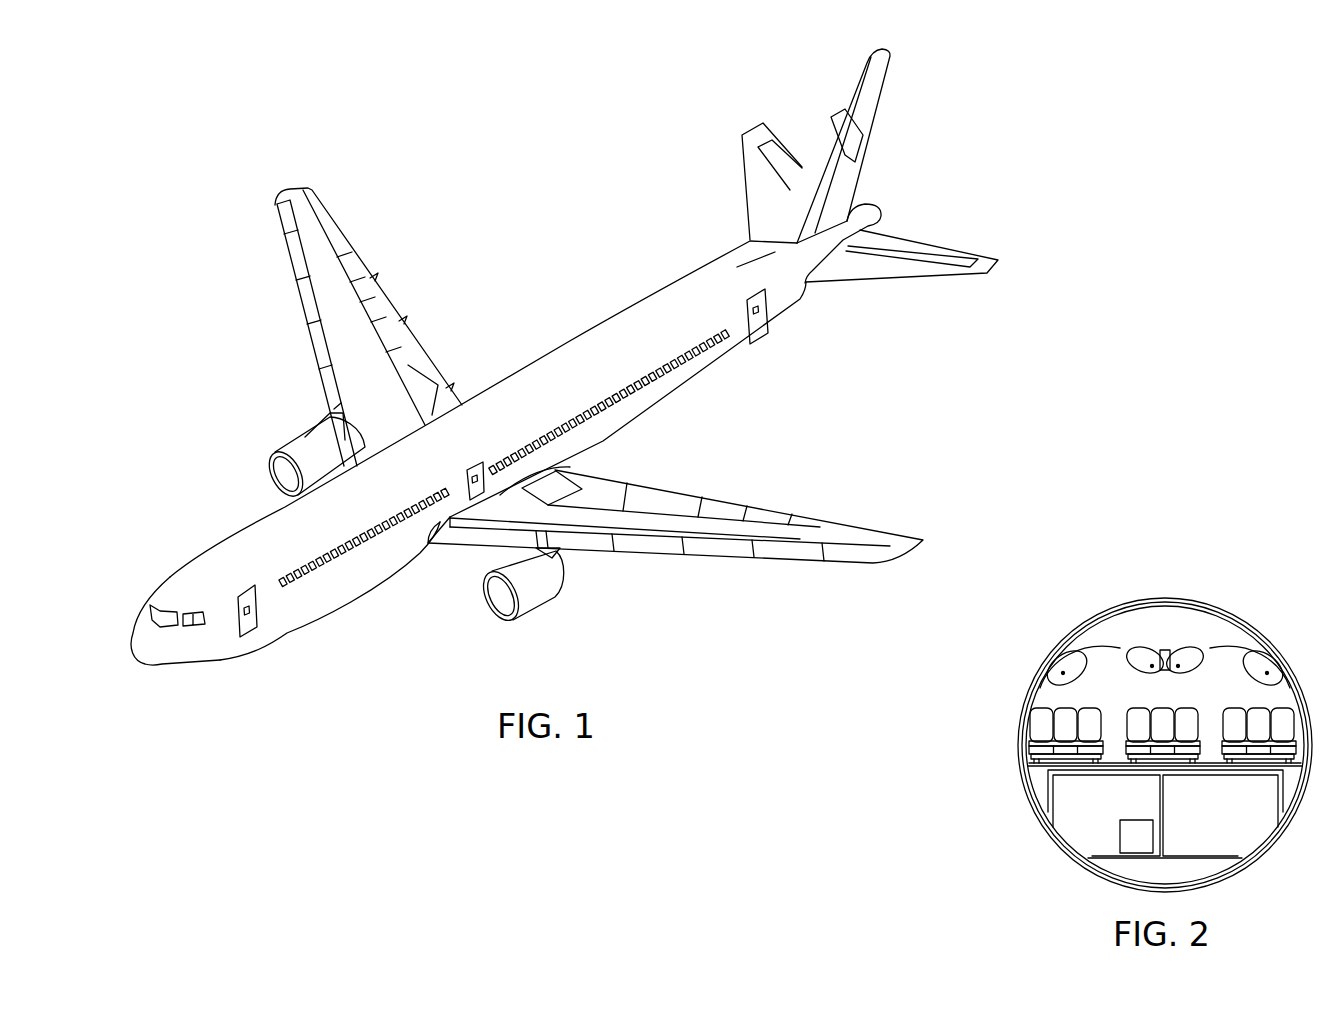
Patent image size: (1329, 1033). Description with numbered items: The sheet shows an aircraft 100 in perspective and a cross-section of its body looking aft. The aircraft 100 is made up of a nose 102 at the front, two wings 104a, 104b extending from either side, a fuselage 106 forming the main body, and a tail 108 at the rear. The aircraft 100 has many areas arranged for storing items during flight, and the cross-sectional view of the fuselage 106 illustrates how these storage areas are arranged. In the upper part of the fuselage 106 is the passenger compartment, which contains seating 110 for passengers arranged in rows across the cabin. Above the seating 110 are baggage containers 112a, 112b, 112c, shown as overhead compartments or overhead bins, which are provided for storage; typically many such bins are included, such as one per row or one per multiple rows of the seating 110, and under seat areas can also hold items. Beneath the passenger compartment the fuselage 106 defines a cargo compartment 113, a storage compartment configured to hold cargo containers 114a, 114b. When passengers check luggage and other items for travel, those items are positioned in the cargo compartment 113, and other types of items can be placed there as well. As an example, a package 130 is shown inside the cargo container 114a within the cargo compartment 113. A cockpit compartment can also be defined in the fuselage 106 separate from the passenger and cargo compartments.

In FIG. 1, the aircraft 100 is at (502, 291).
In FIG. 1, the nose 102 is at (150, 680).
In FIG. 1, the wing 104a is at (316, 176).
In FIG. 1, the wing 104b is at (942, 540).
In FIG. 1, the fuselage 106 is at (650, 400).
In FIG. 2, the fuselage 106 is at (1100, 604).
In FIG. 1, the tail 108 is at (905, 55).
In FIG. 2, the seating 110 is at (1038, 702).
In FIG. 2, the baggage container 112a is at (1060, 650).
In FIG. 2, the baggage container 112b is at (1184, 650).
In FIG. 2, the baggage container 112c is at (1258, 654).
In FIG. 2, the cargo compartment 113 is at (1045, 793).
In FIG. 2, the cargo container 114a is at (1075, 830).
In FIG. 2, the cargo container 114b is at (1259, 829).
In FIG. 2, the package 130 is at (1115, 850).